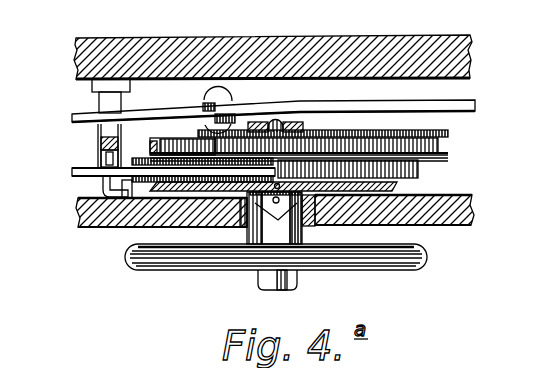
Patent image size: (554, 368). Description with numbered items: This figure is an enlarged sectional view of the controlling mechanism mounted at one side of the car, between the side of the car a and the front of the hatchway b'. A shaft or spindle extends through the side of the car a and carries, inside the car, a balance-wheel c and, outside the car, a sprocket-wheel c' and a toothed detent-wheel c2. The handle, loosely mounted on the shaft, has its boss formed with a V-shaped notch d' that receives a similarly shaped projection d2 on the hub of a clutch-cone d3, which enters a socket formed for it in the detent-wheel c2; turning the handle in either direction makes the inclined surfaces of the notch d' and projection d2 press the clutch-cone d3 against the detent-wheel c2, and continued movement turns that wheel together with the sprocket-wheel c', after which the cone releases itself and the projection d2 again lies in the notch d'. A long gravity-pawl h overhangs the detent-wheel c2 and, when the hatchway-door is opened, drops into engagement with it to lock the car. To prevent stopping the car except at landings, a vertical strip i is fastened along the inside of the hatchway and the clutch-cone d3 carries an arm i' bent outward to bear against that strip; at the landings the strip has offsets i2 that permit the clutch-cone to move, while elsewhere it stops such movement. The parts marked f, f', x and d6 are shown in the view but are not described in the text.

The front of the hatchway b' is at (273, 43).
The plate f is at (280, 97).
The plate support post f' is at (125, 96).
The offset i2 is at (100, 143).
The vertical strip i is at (89, 160).
The arm i' is at (163, 178).
The gravity-pawl h is at (73, 171).
The post x is at (127, 196).
The side of the car a is at (84, 226).
The sprocket-wheel c' is at (299, 121).
The toothed detent-wheel c2 is at (418, 176).
The clutch-cone d3 is at (385, 192).
The left boss of spindle d6 is at (255, 203).
The V-shaped notch d' is at (263, 254).
The projection d2 is at (278, 220).
The balance-wheel c is at (276, 274).